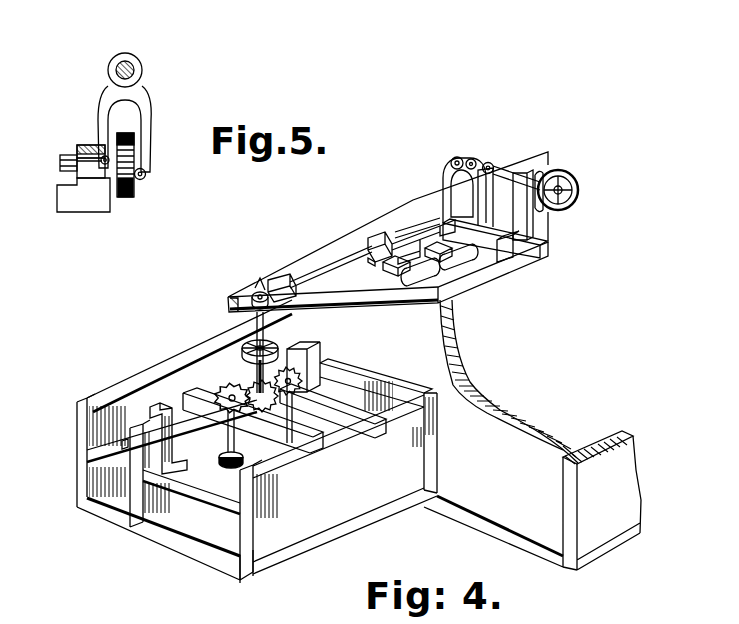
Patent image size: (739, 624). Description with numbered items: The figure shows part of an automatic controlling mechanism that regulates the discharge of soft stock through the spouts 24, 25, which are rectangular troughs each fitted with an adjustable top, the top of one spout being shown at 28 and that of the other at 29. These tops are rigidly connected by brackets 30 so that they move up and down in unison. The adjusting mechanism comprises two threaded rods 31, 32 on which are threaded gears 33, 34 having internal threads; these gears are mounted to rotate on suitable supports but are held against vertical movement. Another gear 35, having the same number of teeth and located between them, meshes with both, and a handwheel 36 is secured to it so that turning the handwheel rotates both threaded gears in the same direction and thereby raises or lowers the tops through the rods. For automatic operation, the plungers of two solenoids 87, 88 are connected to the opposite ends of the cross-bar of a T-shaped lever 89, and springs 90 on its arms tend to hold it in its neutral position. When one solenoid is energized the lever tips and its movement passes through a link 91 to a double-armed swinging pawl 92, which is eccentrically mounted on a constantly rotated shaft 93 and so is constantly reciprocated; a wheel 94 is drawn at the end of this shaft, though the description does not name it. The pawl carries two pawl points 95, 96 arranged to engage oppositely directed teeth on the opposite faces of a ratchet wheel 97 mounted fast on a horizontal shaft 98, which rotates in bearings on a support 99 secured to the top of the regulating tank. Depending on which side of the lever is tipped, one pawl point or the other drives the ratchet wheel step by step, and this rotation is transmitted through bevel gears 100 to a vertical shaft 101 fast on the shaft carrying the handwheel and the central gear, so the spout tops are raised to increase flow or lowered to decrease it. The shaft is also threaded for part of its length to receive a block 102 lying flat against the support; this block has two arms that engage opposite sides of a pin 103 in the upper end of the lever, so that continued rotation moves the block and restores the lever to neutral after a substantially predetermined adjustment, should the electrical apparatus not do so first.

In FIG. 4, the spout 24 is at (205, 537).
In FIG. 4, the spout 25 is at (118, 498).
In FIG. 4, the top of spout 28 is at (185, 498).
In FIG. 4, the top of spout 29 is at (95, 460).
In FIG. 4, the bracket 30 is at (152, 397).
In FIG. 4, the threaded rod 31 is at (228, 440).
In FIG. 4, the threaded rod 32 is at (284, 418).
In FIG. 4, the gear 33 is at (218, 392).
In FIG. 4, the gear 34 is at (330, 364).
In FIG. 4, the gear 35 is at (250, 386).
In FIG. 4, the handwheel 36 is at (253, 338).
In FIG. 4, the solenoid 87 is at (496, 246).
In FIG. 4, the solenoid 88 is at (420, 272).
In FIG. 4, the T-shaped lever 89 is at (405, 236).
In FIG. 4, the spring 90 is at (383, 262).
In FIG. 5, the link 91 is at (102, 158).
In FIG. 4, the link 91 is at (422, 218).
In FIG. 5, the double-armed swinging pawl 92 is at (148, 108).
In FIG. 4, the double-armed swinging pawl 92 is at (498, 168).
In FIG. 5, the shaft 93 is at (137, 66).
In FIG. 4, the shaft 93 is at (462, 160).
In FIG. 4, the hand wheel 94 is at (520, 178).
In FIG. 5, the pawl point 95 is at (107, 190).
In FIG. 5, the pawl point 96 is at (147, 171).
In FIG. 5, the ratchet wheel 97 is at (131, 194).
In FIG. 4, the horizontal shaft 98 is at (327, 262).
In FIG. 4, the support 99 is at (285, 273).
In FIG. 4, the bevel gears 100 is at (257, 292).
In FIG. 4, the vertical shaft 101 is at (270, 332).
In FIG. 4, the block 102 is at (373, 240).
In FIG. 4, the pin 103 is at (353, 247).